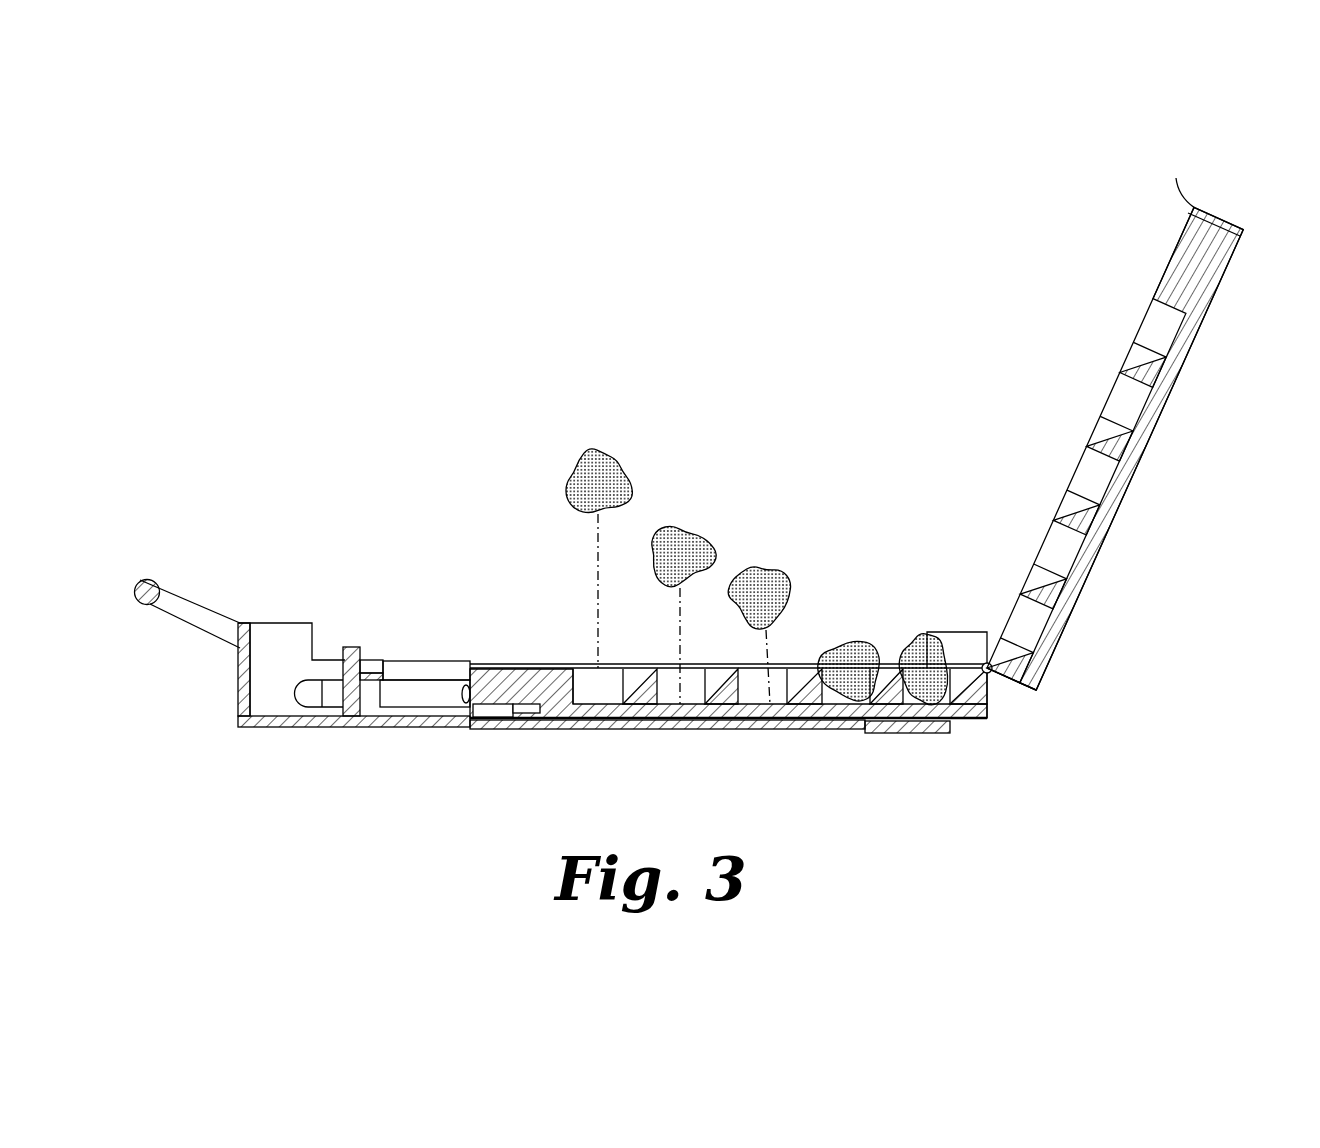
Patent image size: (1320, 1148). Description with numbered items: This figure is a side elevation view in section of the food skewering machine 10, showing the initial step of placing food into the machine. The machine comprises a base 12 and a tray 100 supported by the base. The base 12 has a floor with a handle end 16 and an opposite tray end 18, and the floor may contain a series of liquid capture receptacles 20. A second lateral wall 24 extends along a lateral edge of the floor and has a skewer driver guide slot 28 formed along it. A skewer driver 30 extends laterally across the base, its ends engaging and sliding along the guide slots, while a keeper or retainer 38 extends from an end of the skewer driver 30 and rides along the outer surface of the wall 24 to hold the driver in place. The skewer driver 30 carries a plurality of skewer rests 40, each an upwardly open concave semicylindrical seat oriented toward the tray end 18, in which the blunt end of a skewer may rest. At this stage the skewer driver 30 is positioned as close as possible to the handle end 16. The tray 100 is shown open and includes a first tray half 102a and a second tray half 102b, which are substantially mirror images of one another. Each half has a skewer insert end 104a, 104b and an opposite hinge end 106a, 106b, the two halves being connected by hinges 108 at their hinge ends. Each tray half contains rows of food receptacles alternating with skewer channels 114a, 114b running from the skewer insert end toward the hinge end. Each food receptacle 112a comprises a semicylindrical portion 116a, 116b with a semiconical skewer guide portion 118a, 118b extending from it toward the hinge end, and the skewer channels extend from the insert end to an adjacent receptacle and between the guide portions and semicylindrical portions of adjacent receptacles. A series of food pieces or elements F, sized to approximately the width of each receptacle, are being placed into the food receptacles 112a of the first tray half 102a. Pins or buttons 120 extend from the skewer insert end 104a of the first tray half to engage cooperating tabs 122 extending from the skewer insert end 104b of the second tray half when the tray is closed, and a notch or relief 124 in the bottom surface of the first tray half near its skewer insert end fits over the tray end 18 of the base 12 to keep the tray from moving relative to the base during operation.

The food skewering machine 10 is at (956, 816).
The base 12 is at (340, 726).
The handle end 16 is at (240, 690).
The tray end 18 is at (950, 732).
The liquid capture receptacles 20 is at (580, 720).
The second lateral wall 24 is at (296, 656).
The skewer driver guide slot 28 is at (410, 686).
The skewer driver 30 is at (348, 655).
The second keeper or retainer 38 is at (315, 700).
The skewer rests 40 is at (370, 660).
The tray 100 is at (832, 339).
The first tray half 102a is at (640, 720).
The second tray half 102b is at (1128, 480).
The skewer insert end 104a is at (470, 666).
The skewer insert end 104b is at (1232, 218).
The hinge end 106a is at (993, 715).
The hinge end 106b is at (1037, 684).
The hinges 108 is at (991, 673).
The food receptacles 112a is at (596, 658).
The skewer channels 114a is at (527, 665).
The skewer channels 114b is at (1180, 252).
The semicylindrical portion 116a is at (597, 670).
The semicylindrical portion 116b is at (1070, 505).
The semiconical skewer guide portion 118a is at (640, 677).
The semiconical skewer guide portion 118b is at (1133, 357).
The pins or buttons 120 is at (457, 707).
The tabs 122 is at (1180, 195).
The notch or relief 124 is at (512, 712).
The food pieces or elements F is at (768, 568).